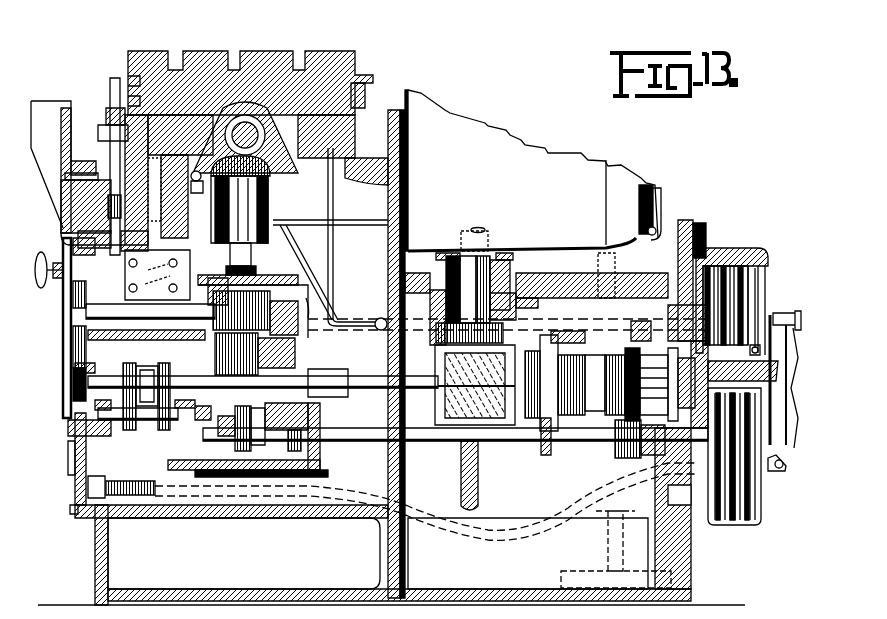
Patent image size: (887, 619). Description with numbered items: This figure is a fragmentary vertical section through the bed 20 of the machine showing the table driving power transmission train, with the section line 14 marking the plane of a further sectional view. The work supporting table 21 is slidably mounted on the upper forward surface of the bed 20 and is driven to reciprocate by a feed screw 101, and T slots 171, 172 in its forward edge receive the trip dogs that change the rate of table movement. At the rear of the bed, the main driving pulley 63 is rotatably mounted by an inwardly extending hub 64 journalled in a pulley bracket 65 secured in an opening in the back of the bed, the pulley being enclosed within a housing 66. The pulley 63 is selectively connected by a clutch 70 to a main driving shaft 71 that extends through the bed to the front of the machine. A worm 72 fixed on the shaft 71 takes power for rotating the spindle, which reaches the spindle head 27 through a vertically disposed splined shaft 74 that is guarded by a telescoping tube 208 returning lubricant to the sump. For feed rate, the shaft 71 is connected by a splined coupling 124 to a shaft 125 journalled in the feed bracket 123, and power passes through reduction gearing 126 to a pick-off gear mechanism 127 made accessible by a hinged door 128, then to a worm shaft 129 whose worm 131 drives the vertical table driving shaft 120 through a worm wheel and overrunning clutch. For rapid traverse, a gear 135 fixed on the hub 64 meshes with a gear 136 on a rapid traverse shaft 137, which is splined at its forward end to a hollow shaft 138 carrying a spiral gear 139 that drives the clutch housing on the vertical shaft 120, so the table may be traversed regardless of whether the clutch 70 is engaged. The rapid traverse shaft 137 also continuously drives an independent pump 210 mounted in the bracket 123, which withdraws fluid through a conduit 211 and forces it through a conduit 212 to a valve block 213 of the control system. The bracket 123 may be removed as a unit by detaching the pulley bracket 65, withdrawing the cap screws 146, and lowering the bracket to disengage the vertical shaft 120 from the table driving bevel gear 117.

The section line 14- 14 is at (125, 234).
The bed 20 is at (90, 556).
The work supporting table 21 is at (206, 55).
The spindle head 27 is at (518, 150).
The main driving pulley 63 is at (733, 302).
The hub 64 is at (645, 355).
The pulley bracket 65 is at (667, 297).
The housing 66 is at (735, 518).
The clutch 70 is at (780, 450).
The main driving shaft 71 is at (420, 378).
The worm 72 is at (440, 390).
The splined shaft 74 is at (484, 228).
The feed screw 101 is at (240, 122).
The table driving bevel gear 117 is at (262, 183).
The vertical table driving shaft 120 is at (250, 253).
The bracket 123 is at (290, 367).
The splined coupling 124 is at (330, 369).
The shaft 125 is at (190, 370).
The reduction gearing 126 is at (128, 420).
The pick-off gear mechanism 127 is at (67, 374).
The hinged door 128 is at (60, 310).
The worm shaft 129 is at (97, 283).
The worm 131 is at (300, 296).
The gear 135 is at (615, 355).
The gear 136 is at (622, 450).
The rapid traverse shaft 137 is at (448, 436).
The hollow shaft 138 is at (290, 448).
The spiral gear 139 is at (207, 433).
The cap screws 146 is at (64, 506).
The T slot 171 is at (125, 70).
The T slot 172 is at (125, 92).
The telescoping tube 208 is at (420, 245).
The pump 210 is at (320, 422).
The conduit 211 is at (318, 448).
The conduit 212 is at (292, 410).
The valve block 213 is at (184, 270).